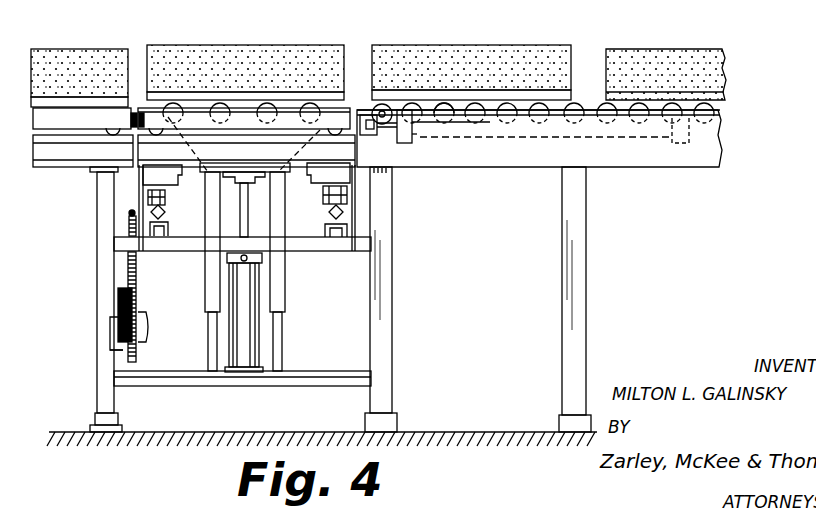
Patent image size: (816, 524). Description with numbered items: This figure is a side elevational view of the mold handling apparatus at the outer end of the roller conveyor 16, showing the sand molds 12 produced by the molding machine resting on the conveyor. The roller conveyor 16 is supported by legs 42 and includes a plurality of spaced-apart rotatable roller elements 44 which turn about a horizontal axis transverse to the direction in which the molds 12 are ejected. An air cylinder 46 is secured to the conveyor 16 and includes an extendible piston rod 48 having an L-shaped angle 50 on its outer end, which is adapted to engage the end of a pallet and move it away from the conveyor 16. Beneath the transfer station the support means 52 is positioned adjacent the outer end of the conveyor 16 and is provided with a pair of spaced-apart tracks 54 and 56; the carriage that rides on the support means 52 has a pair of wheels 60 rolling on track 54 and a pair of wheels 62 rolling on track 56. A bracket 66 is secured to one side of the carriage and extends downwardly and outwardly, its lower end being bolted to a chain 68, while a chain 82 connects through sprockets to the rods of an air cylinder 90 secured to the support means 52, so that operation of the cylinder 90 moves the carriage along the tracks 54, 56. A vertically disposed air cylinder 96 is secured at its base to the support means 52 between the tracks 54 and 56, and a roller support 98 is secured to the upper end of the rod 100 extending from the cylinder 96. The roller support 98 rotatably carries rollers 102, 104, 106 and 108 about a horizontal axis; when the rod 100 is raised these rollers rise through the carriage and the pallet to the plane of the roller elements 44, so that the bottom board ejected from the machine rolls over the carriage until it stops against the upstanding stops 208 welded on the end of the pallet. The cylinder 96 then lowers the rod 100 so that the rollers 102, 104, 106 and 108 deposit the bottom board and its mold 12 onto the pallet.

The sand mold 12 is at (82, 62).
The roller conveyor 16 is at (735, 113).
The legs 42 is at (390, 310).
The roller elements 44 is at (599, 106).
The air cylinder 46 is at (489, 130).
The piston rod 48 is at (383, 133).
The L-shaped angle 50 is at (360, 110).
The support means 52 is at (82, 357).
The track 54 is at (336, 216).
The track 56 is at (158, 214).
The wheels 60 is at (347, 207).
The wheels 62 is at (152, 198).
The bracket 66 is at (138, 192).
The chain 68 is at (130, 225).
The chain 82 is at (125, 285).
The air cylinder 90 is at (113, 353).
The air cylinder 96 is at (252, 348).
The roller support 98 is at (295, 5).
The rod 100 is at (243, 217).
The roller 102 is at (307, 100).
The roller 104 is at (267, 100).
The roller 106 is at (220, 100).
The roller 108 is at (173, 100).
The upstanding stops 208 is at (136, 100).